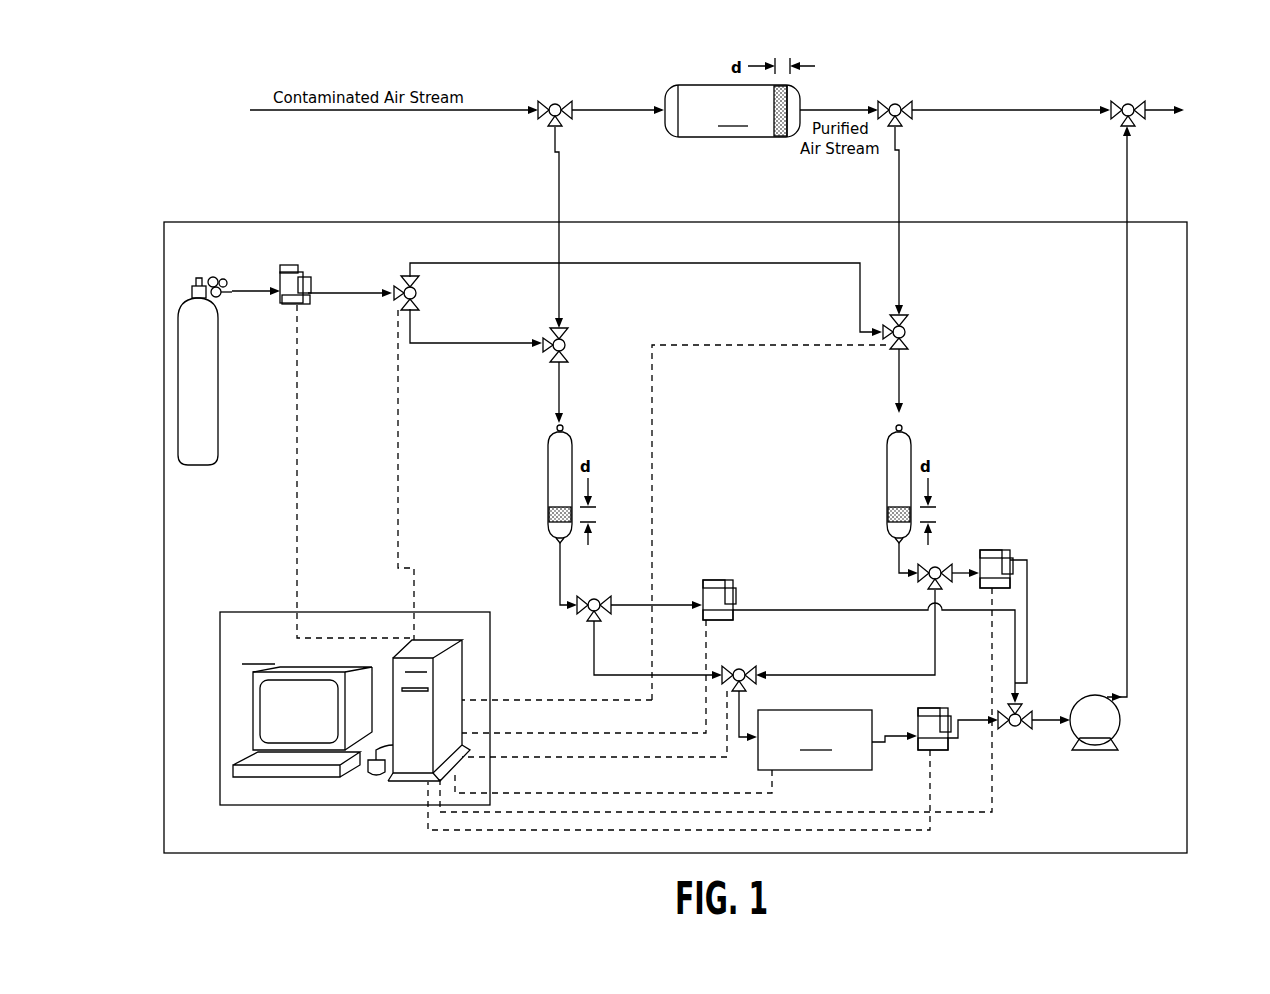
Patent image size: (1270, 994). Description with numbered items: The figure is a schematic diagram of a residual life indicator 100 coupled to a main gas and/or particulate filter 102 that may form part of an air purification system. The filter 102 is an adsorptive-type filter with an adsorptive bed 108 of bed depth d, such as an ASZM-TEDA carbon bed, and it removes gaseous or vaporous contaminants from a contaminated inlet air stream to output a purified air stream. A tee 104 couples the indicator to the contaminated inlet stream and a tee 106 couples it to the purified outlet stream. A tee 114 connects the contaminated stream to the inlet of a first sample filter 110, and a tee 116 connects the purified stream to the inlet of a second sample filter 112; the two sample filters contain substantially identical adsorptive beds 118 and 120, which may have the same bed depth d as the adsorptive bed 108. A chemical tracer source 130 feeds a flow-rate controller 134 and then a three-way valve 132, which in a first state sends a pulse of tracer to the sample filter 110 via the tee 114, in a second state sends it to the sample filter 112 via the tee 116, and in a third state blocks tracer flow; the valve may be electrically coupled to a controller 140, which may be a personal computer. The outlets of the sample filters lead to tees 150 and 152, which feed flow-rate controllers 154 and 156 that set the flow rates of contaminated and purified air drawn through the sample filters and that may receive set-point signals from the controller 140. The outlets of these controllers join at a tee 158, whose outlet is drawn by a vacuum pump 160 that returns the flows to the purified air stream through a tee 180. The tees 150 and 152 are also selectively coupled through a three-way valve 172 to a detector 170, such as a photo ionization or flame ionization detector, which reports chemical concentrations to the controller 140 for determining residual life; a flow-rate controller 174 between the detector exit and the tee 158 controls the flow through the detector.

The residual life indicator 100 is at (1187, 281).
The filter 102 is at (732, 111).
The tee 104 is at (560, 97).
The tee 106 is at (900, 97).
The adsorptive bed 108 is at (790, 103).
The sample filter 110 is at (572, 445).
The sample filter 112 is at (911, 443).
The tee 114 is at (570, 340).
The tee 116 is at (910, 327).
The adsorptive bed 118 is at (548, 512).
The adsorptive bed 120 is at (887, 512).
The chemical tracer source 130 is at (210, 442).
The three-way valve 132 is at (418, 290).
The flow-rate controller 134 is at (284, 268).
The controller 140 is at (355, 708).
The tee 150 is at (598, 590).
The tee 152 is at (942, 556).
The flow-rate controller 154 is at (720, 580).
The flow-rate controller 156 is at (1000, 550).
The tee 158 is at (1020, 735).
The vacuum pump 160 is at (1107, 732).
The detector 170 is at (815, 740).
The three-way valve 172 is at (745, 658).
The flow-rate controller 174 is at (920, 712).
The tee 180 is at (1132, 97).